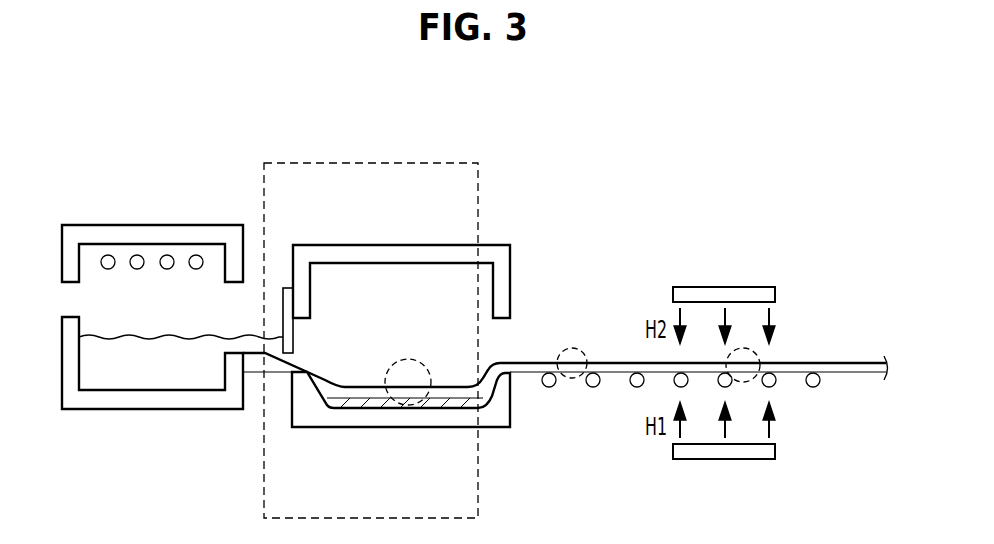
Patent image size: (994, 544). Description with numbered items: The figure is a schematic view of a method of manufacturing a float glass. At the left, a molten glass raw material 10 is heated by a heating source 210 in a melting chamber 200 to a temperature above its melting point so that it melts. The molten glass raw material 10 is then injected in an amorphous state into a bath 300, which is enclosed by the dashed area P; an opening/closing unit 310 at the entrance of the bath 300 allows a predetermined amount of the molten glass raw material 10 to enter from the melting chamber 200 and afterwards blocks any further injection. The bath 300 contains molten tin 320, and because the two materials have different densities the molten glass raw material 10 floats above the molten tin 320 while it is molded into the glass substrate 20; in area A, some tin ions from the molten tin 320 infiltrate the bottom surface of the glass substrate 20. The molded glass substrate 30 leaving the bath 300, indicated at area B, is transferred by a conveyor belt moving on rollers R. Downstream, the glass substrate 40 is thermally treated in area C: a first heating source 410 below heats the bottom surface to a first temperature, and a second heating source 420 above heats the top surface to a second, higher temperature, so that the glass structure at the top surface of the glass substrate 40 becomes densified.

The molten glass raw material 10 is at (192, 376).
The glass substrate 20 is at (417, 378).
The glass substrate 30 is at (572, 367).
The glass substrate 40 is at (752, 363).
The melting chamber 200 is at (133, 397).
The heating source 210 is at (108, 253).
The bath 300 is at (352, 418).
The opening/closing unit 310 is at (290, 289).
The molten tin 320 is at (448, 402).
The first heating source 410 is at (725, 460).
The second heating source 420 is at (725, 288).
The area P is at (370, 162).
The area A is at (407, 358).
The area B is at (572, 348).
The area C is at (762, 357).
The rollers R is at (634, 386).